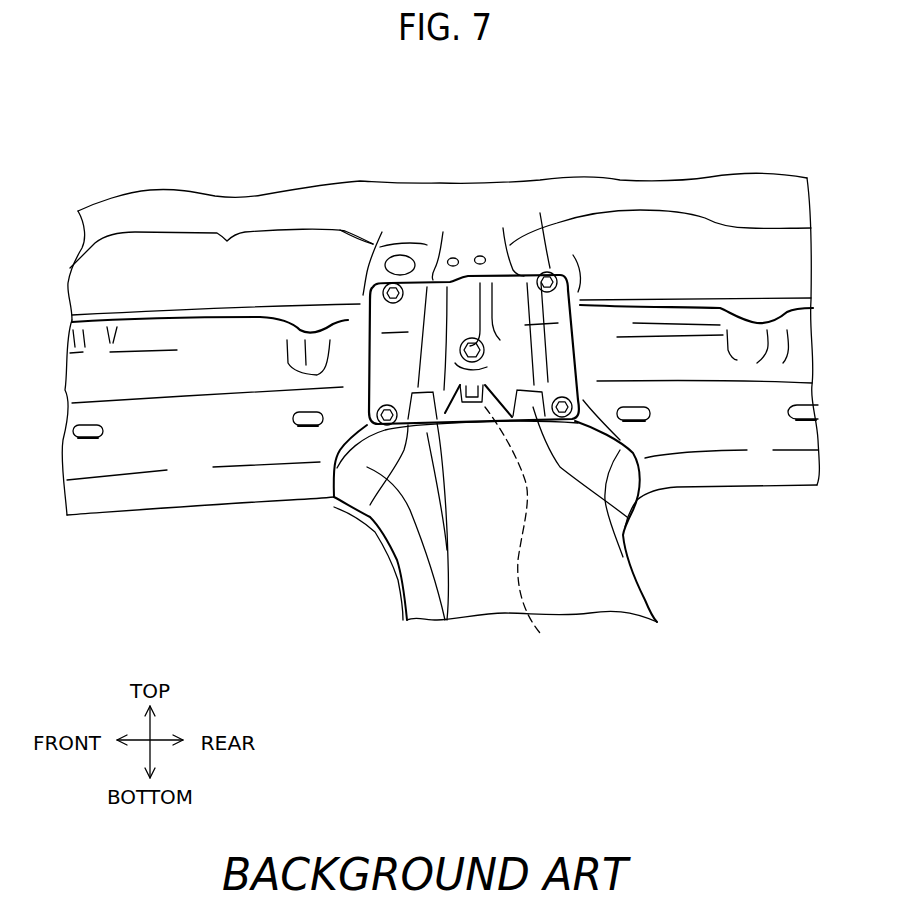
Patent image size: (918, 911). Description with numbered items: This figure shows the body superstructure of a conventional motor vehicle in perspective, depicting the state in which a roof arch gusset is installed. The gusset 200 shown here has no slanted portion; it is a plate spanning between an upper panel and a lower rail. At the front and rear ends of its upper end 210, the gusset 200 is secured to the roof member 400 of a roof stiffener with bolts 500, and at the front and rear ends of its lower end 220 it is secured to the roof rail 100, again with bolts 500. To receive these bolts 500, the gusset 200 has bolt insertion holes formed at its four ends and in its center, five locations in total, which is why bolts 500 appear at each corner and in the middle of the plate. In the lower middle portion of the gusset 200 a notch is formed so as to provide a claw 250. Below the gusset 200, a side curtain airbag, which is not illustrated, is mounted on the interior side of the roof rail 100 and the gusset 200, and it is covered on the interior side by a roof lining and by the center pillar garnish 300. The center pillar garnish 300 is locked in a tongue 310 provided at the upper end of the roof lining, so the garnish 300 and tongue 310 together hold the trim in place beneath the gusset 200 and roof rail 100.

The roof rail 100 is at (180, 487).
The gusset 200 is at (340, 443).
The upper end 210 is at (437, 279).
The lower end 220 is at (370, 505).
The claw 250 is at (533, 625).
The center pillar garnish 300 is at (413, 587).
The tongue 310 is at (450, 590).
The roof member 400 is at (267, 240).
The bolts 500 is at (480, 348).